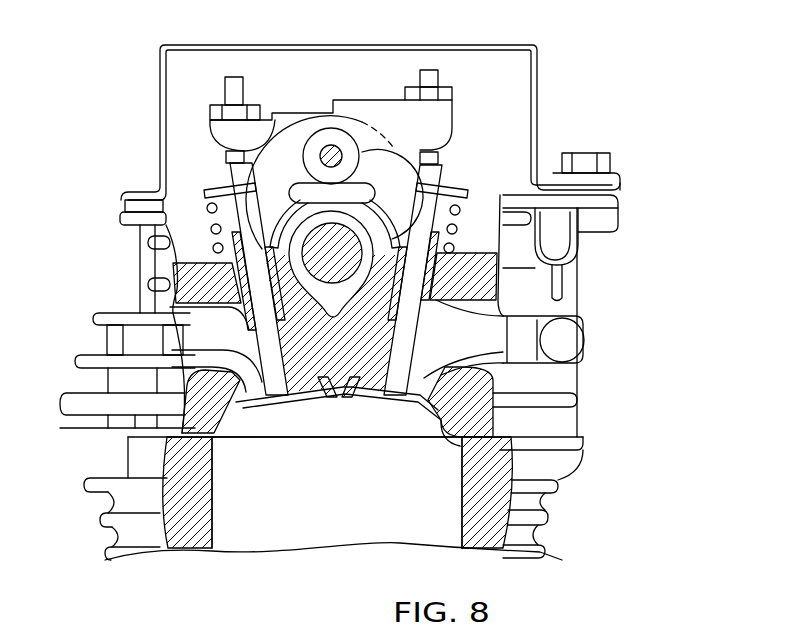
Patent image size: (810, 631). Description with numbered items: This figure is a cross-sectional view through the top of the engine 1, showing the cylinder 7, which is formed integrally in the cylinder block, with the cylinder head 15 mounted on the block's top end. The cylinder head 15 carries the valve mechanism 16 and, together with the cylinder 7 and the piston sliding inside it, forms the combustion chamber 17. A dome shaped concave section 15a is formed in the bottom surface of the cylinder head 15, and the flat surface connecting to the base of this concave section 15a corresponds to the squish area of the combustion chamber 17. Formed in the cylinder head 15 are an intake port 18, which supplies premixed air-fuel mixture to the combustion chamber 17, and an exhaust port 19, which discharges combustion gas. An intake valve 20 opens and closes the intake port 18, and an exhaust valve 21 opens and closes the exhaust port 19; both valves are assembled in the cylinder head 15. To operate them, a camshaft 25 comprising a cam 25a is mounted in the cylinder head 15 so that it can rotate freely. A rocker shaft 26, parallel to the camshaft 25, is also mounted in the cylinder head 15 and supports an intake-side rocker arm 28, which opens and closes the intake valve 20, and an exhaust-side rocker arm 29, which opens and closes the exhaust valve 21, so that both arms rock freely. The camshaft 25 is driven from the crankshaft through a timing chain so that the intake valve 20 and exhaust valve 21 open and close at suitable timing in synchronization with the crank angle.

The engine 1 is at (672, 87).
The cylinder 7 is at (610, 512).
The cylinder head 15 is at (604, 281).
The concave section 15a is at (490, 455).
The valve mechanism 16 is at (379, 88).
The combustion chamber 17 is at (352, 477).
The intake port 18 is at (83, 362).
The exhaust port 19 is at (577, 362).
The intake valve 20 is at (268, 352).
The exhaust valve 21 is at (400, 352).
The camshaft 25 is at (297, 262).
The cam 25a is at (300, 278).
The rocker shaft 26 is at (331, 147).
The intake-side rocker arm 28 is at (393, 173).
The exhaust-side rocker arm 29 is at (260, 157).